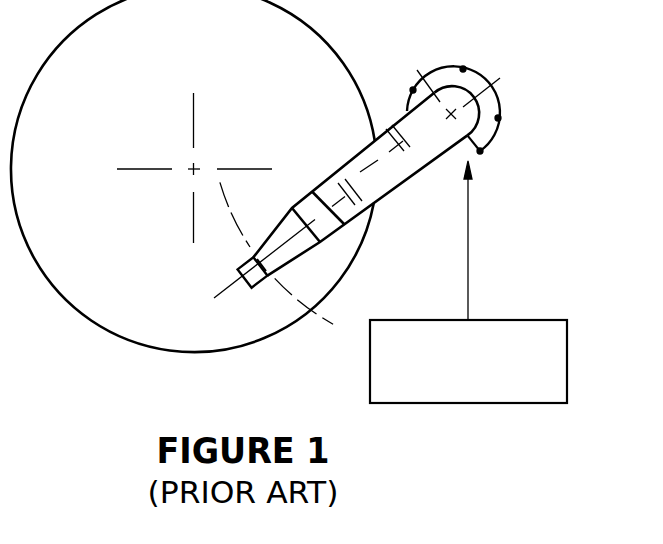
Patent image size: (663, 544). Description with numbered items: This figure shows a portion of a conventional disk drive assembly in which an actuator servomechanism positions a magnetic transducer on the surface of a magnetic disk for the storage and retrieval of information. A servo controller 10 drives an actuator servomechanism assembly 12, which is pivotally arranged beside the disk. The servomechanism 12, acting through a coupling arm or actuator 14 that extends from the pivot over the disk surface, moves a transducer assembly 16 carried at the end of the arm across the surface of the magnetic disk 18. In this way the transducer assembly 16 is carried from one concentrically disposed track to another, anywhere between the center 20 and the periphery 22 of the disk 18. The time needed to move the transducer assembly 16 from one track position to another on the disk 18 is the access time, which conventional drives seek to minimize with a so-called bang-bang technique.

The servo controller 10 is at (525, 320).
The actuator servomechanism assembly 12 is at (498, 120).
The coupling arm or actuator 14 is at (402, 184).
The transducer assembly 16 is at (249, 264).
The magnetic disk 18 is at (113, 64).
The center 20 is at (194, 163).
The periphery 22 is at (68, 297).